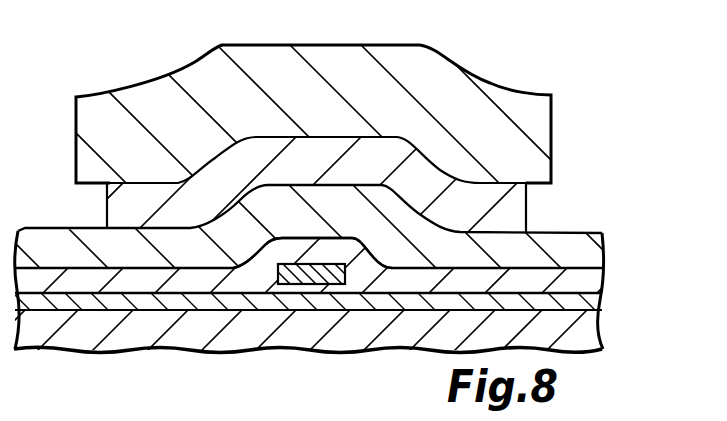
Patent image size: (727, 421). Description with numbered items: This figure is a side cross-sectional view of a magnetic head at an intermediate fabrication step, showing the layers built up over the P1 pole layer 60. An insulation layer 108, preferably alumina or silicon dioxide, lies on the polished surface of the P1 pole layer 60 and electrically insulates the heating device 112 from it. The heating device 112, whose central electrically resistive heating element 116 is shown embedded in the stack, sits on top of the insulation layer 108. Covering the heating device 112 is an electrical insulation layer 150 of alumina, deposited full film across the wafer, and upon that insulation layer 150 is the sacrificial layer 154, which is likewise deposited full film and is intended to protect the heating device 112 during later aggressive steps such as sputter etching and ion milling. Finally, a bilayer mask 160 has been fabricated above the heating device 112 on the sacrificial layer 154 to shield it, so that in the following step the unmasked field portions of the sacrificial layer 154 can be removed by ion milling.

The P1 pole layer 60 is at (150, 335).
The insulation layer 108 is at (272, 284).
The heating device 112 is at (305, 353).
The heating element 116 is at (322, 285).
The electrical insulation layer 150 is at (572, 283).
The sacrificial layer 154 is at (535, 243).
The bilayer mask 160 is at (450, 93).